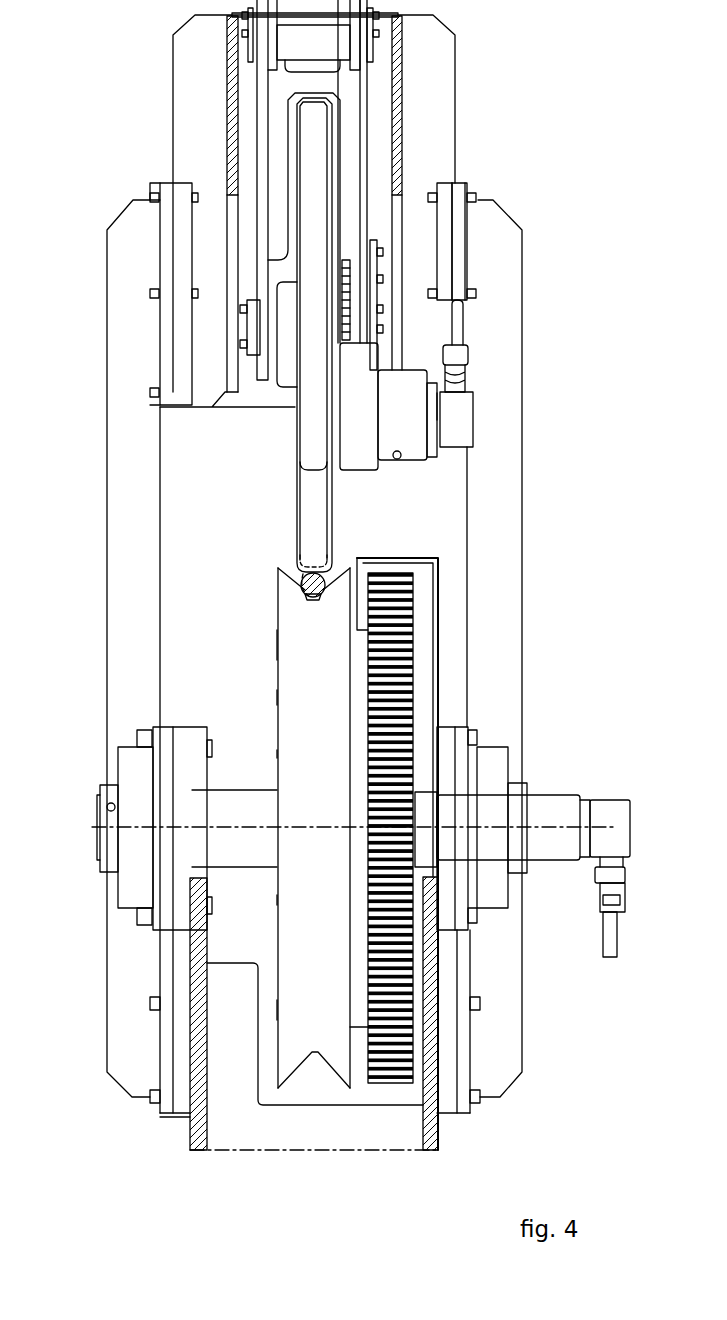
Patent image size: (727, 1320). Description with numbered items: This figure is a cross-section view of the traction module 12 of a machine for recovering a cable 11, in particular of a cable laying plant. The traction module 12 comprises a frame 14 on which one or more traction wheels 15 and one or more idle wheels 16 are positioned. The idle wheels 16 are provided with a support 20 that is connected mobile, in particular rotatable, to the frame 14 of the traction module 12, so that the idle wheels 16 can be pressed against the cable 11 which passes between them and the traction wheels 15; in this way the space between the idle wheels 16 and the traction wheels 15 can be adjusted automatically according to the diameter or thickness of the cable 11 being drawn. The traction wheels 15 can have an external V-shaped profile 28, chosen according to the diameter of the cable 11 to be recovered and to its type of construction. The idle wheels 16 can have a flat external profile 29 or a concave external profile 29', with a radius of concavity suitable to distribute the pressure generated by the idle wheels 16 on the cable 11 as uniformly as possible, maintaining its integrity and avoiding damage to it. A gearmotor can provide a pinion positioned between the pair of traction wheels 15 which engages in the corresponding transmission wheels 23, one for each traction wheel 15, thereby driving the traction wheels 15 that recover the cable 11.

The traction module 12 is at (598, 62).
The support 20 is at (259, 117).
The idle wheel 16 is at (311, 452).
The flat external profile 29 is at (335, 559).
The concave external profile 29' is at (294, 557).
The cable 11 is at (310, 597).
The traction wheel 15 is at (301, 723).
The external V-shaped profile 28 is at (298, 1069).
The transmission wheel 23 is at (391, 1045).
The frame 14 is at (183, 1137).